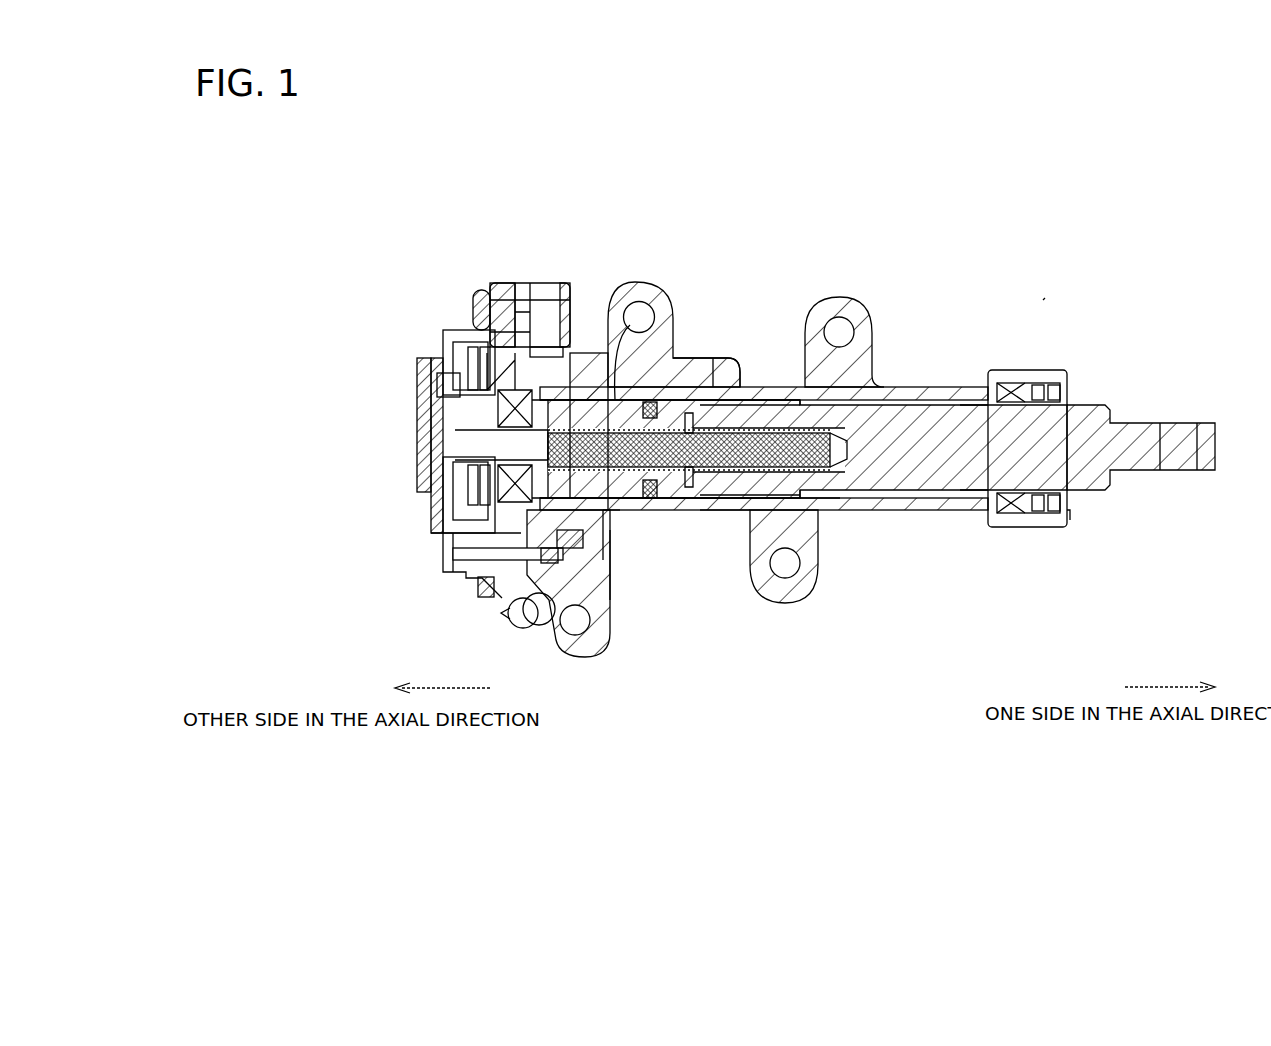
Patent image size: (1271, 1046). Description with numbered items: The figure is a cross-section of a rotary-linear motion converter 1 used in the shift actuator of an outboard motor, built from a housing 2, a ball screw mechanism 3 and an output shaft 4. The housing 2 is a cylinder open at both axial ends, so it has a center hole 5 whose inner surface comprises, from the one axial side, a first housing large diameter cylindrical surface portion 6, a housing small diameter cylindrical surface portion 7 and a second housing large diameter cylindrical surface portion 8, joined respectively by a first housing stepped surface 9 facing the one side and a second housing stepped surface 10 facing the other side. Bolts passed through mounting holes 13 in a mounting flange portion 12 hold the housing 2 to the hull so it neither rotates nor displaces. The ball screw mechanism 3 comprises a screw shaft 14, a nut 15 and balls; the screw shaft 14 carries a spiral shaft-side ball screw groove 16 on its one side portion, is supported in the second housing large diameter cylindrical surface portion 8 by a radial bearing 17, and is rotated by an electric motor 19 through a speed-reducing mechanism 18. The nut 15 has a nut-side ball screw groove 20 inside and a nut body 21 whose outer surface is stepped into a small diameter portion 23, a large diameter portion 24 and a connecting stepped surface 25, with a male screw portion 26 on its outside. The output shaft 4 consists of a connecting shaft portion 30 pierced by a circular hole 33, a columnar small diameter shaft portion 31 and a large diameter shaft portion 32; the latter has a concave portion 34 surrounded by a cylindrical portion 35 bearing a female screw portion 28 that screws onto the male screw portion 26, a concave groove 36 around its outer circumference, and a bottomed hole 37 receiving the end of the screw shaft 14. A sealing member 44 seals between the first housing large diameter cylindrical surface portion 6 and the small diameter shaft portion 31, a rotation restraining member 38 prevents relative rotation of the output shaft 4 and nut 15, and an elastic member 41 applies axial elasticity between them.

The rotary-linear motion converter 1 is at (1043, 300).
The housing 2 is at (898, 520).
The ball screw mechanism 3 is at (580, 345).
The output shaft 4 is at (945, 392).
The center hole 5 is at (928, 512).
The first housing large diameter cylindrical surface portion 6 is at (1020, 512).
The housing small diameter cylindrical surface portion 7 is at (893, 385).
The second housing large diameter cylindrical surface portion 8 is at (527, 290).
The first housing stepped surface 9 is at (1010, 385).
The second housing stepped surface 10 is at (528, 628).
The mounting flange portion 12 is at (650, 296).
The mounting hole 13 is at (640, 302).
The screw shaft 14 is at (745, 395).
The nut 15 is at (562, 655).
The shaft-side ball screw groove 16 is at (770, 410).
The radial bearing 17 is at (431, 530).
The speed-reducing mechanism 18 is at (445, 375).
The electric motor 19 is at (720, 525).
The nut-side ball screw groove 20 is at (614, 600).
The nut body 21 is at (553, 300).
The small diameter portion 23 is at (680, 482).
The large diameter portion 24 is at (597, 400).
The stepped surface 25 is at (670, 340).
The male screw portion 26 is at (665, 500).
The female screw portion 28 is at (710, 510).
The connecting shaft portion 30 is at (1128, 440).
The small diameter shaft portion 31 is at (965, 512).
The large diameter shaft portion 32 is at (730, 520).
The circular hole 33 is at (1180, 465).
The concave portion 34 is at (638, 485).
The cylindrical portion 35 is at (705, 360).
The concave groove 36 is at (656, 505).
The bottomed hole 37 is at (832, 505).
The rotation restraining member 38 is at (692, 358).
The elastic member 41 is at (640, 505).
The sealing member 44 is at (1068, 518).